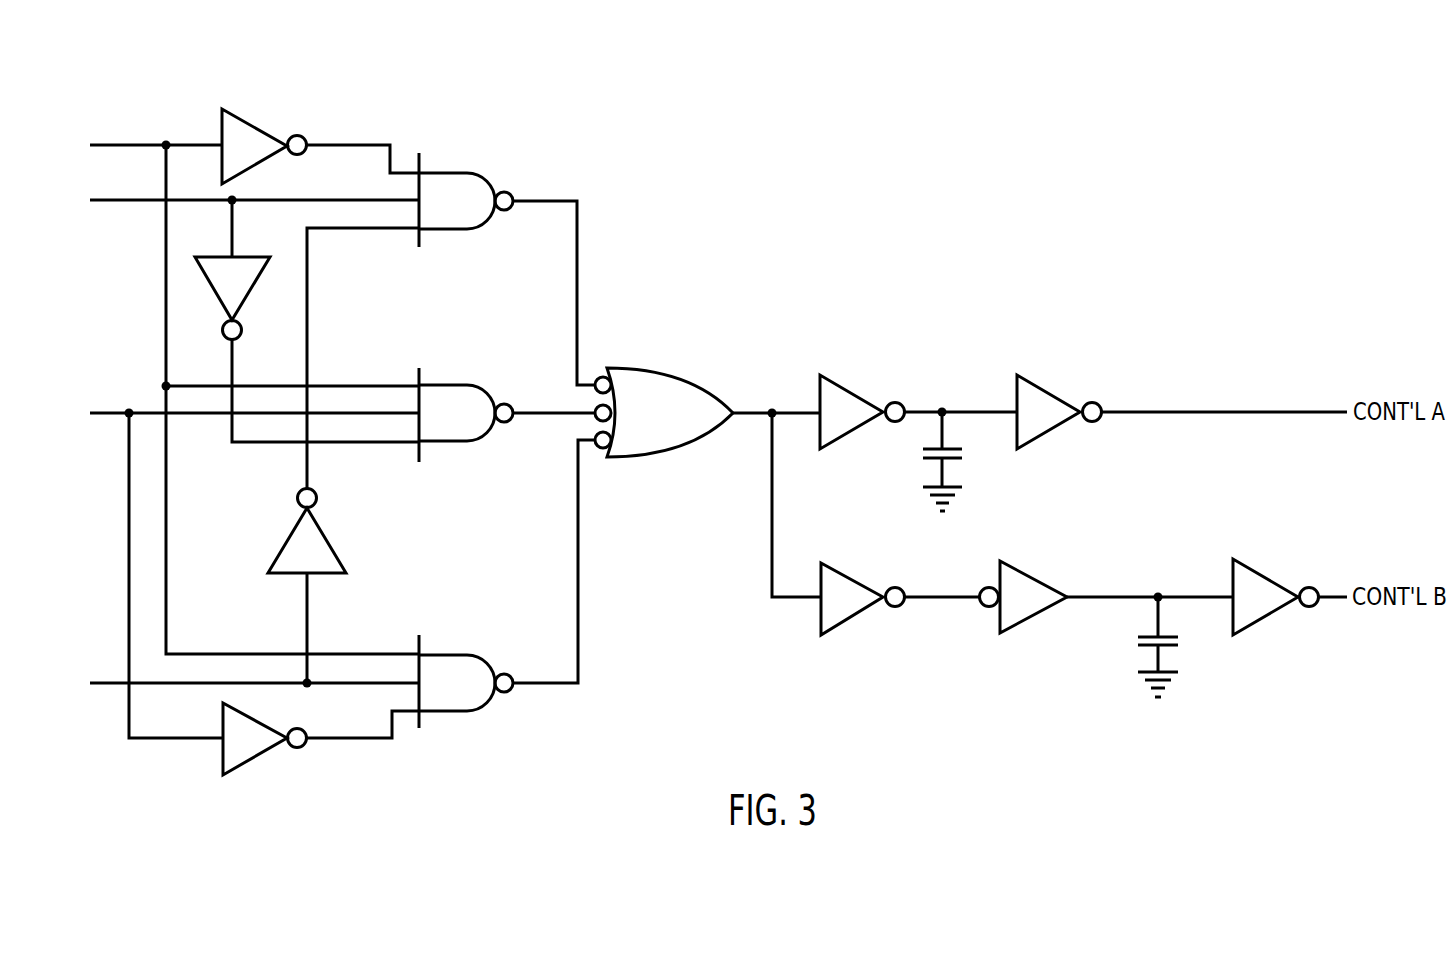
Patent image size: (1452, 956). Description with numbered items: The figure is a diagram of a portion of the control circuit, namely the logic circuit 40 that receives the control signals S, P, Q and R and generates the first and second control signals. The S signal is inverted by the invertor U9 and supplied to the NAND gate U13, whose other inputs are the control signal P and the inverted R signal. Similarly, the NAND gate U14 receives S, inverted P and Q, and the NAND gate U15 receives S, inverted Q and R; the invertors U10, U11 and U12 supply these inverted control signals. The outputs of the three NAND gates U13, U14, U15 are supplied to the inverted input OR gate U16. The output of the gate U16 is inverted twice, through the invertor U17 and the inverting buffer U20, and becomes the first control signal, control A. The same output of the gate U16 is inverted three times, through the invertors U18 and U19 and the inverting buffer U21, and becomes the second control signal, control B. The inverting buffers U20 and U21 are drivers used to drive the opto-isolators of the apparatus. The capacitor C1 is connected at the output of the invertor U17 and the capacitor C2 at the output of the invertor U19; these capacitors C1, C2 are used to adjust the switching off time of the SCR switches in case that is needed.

The logic circuit 40 is at (453, 544).
The invertor U9 is at (264, 146).
The invertor U10 is at (232, 298).
The invertor U11 is at (307, 531).
The invertor U12 is at (265, 739).
The NAND gate U13 is at (466, 200).
The NAND gate U14 is at (466, 415).
The NAND gate U15 is at (466, 681).
The inverted input OR gate U16 is at (664, 412).
The invertor U17 is at (862, 412).
The invertor U18 is at (863, 599).
The invertor U19 is at (1024, 597).
The inverting buffer U20 is at (1059, 412).
The inverting buffer U21 is at (1276, 597).
The capacitor C1 is at (958, 461).
The capacitor C2 is at (1175, 647).